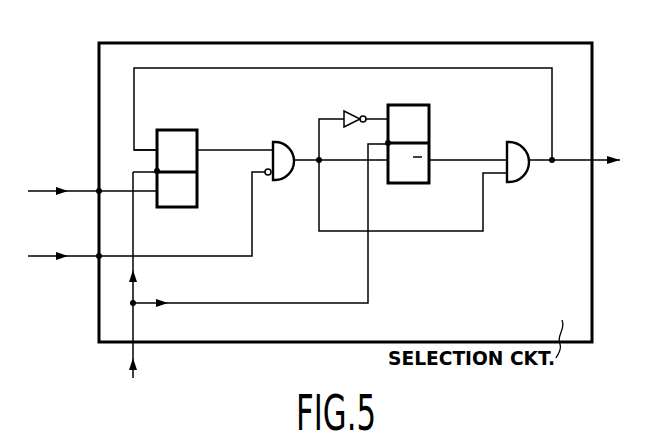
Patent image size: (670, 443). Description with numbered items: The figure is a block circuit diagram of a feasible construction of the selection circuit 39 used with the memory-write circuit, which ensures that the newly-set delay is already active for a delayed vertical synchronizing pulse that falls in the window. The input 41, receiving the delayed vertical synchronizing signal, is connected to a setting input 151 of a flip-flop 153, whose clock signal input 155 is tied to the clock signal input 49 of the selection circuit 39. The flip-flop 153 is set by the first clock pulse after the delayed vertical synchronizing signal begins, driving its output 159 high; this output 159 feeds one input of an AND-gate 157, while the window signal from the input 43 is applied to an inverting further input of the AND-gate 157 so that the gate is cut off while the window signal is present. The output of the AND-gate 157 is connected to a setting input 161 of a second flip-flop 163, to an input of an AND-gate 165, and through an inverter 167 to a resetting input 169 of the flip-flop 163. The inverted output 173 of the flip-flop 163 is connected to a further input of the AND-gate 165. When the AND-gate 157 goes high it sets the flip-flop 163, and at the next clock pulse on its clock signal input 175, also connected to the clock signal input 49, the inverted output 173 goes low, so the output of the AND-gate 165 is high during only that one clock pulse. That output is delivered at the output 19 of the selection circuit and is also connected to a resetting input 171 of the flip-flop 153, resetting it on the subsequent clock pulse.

The output of the selection circuit 19 is at (620, 158).
The selection circuit 39 is at (223, 66).
The input of the selection circuit 41 is at (97, 189).
The input of the selection circuit 43 is at (97, 258).
The clock signal input of the selection circuit 49 is at (134, 344).
The setting input 151 is at (156, 198).
The flip-flop 153 is at (187, 208).
The clock signal input 155 is at (155, 170).
The AND-gate 157 is at (286, 141).
The output 159 is at (198, 144).
The setting input 161 is at (385, 166).
The flip-flop 163 is at (414, 181).
The AND-gate 165 is at (517, 141).
The inverter 167 is at (347, 111).
The resetting input 169 is at (386, 115).
The resetting input 171 is at (156, 148).
The inverted output 173 is at (432, 159).
The clock signal input 175 is at (386, 142).